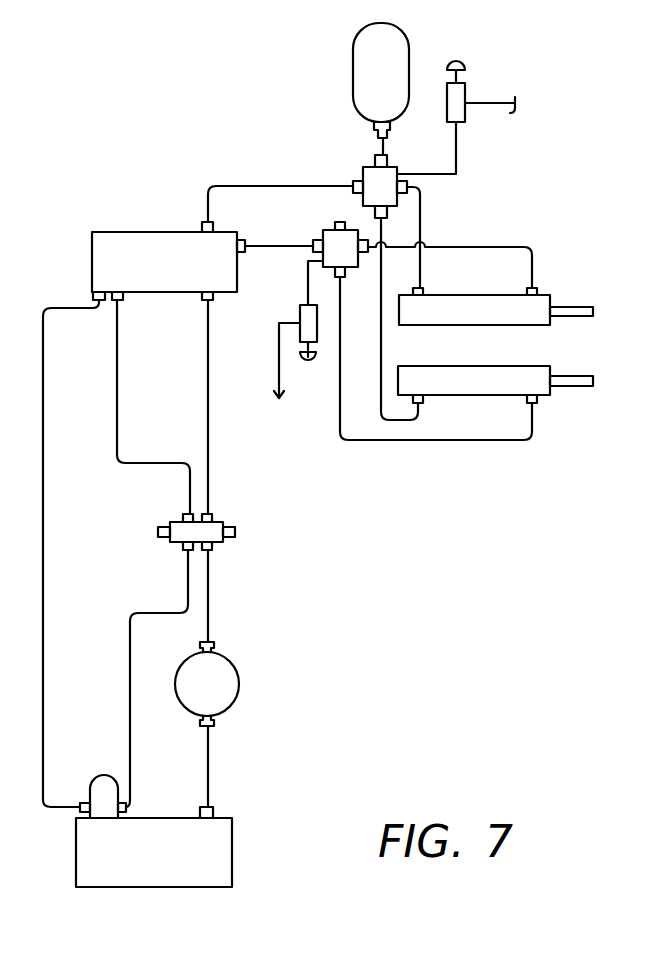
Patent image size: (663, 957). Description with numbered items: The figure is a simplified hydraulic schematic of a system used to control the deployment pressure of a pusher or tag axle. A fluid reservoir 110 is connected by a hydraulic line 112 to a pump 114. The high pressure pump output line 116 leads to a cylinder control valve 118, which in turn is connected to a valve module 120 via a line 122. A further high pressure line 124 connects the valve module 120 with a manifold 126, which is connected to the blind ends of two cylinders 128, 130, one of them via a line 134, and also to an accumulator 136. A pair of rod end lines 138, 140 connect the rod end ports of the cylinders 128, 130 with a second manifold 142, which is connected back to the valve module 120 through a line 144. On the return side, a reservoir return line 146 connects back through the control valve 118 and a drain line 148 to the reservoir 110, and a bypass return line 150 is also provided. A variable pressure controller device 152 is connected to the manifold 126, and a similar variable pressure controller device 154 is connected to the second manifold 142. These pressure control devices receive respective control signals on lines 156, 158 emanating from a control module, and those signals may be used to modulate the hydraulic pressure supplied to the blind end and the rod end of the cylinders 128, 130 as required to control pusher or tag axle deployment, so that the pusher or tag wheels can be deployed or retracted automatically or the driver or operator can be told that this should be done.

The fluid reservoir 110 is at (232, 836).
The hydraulic line 112 is at (210, 758).
The pump 114 is at (232, 664).
The high pressure pump output line 116 is at (209, 590).
The cylinder control valve 118 is at (220, 522).
The valve module 120 is at (130, 232).
The line 122 is at (209, 450).
The high pressure line 124 is at (278, 186).
The manifold 126 is at (363, 165).
The cylinder 128 is at (437, 294).
The cylinder 130 is at (488, 366).
The line 134 is at (383, 343).
The accumulator 136 is at (355, 52).
The rod end line 138 is at (492, 247).
The rod end line 140 is at (440, 441).
The second manifold 142 is at (323, 232).
The line 144 is at (280, 249).
The reservoir return line 146 is at (118, 363).
The drain line 148 is at (130, 658).
The bypass return line 150 is at (44, 517).
The variable pressure controller device 152 is at (467, 90).
The variable pressure controller device 154 is at (300, 315).
The control signal line 156 is at (490, 105).
The control signal line 158 is at (279, 360).